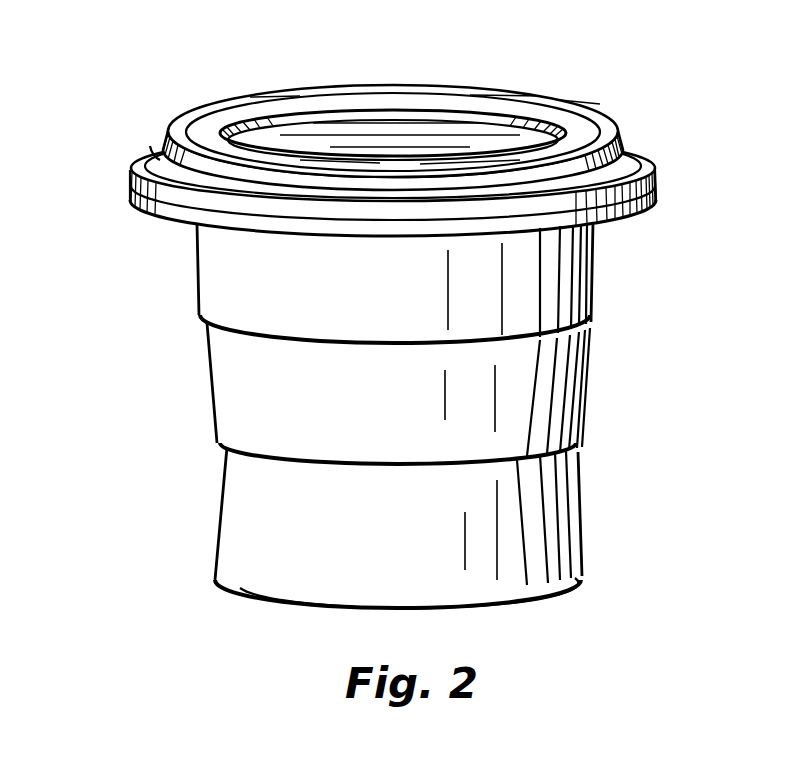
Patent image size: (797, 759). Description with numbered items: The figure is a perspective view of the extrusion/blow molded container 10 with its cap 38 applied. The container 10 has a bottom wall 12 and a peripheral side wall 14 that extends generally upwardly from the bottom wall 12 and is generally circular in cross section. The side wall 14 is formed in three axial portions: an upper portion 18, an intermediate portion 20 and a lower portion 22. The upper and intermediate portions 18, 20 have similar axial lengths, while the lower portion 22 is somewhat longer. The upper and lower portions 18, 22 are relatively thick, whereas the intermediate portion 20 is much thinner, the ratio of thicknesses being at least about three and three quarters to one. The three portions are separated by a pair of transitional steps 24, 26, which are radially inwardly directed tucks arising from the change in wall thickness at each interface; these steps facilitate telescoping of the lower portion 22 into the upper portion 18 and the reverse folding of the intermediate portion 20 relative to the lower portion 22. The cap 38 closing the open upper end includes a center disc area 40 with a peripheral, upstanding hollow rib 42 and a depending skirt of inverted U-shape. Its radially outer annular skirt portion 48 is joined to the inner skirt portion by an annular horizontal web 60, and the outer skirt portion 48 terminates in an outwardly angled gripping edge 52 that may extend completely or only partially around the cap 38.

The container 10 is at (386, 349).
The bottom wall 12 is at (528, 600).
The peripheral side wall 14 is at (384, 430).
The upper portion 18 is at (213, 246).
The intermediate portion 20 is at (210, 376).
The lower portion 22 is at (217, 540).
The transitional step 24 is at (200, 318).
The transitional step 26 is at (219, 448).
The cap 38 is at (348, 148).
The center disc area 40 is at (367, 128).
The upstanding hollow rib 42 is at (212, 120).
The outer annular skirt portion 48 is at (135, 175).
The gripping edge 52 is at (131, 196).
The horizontal web 60 is at (145, 157).